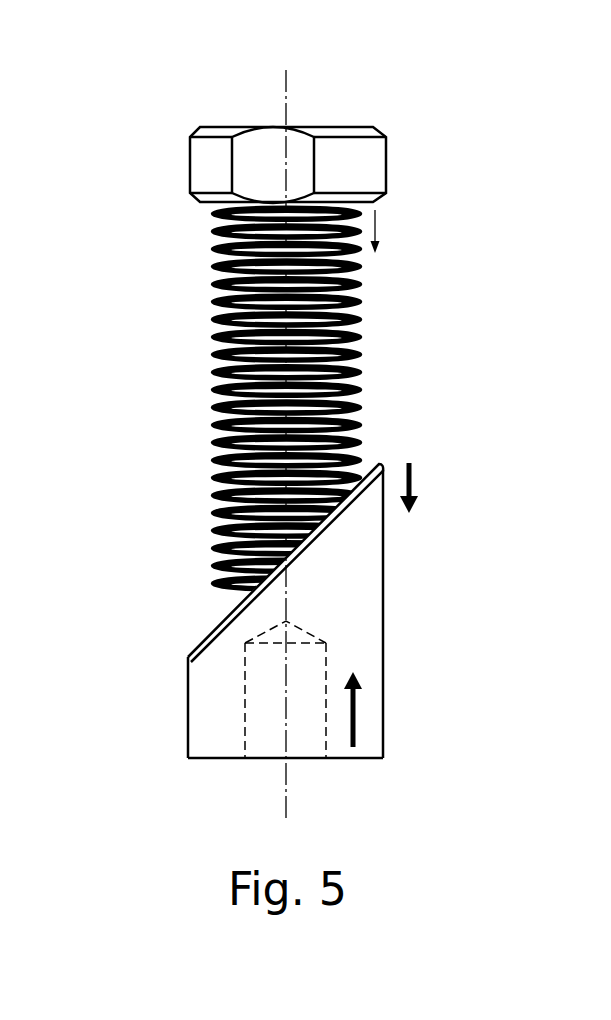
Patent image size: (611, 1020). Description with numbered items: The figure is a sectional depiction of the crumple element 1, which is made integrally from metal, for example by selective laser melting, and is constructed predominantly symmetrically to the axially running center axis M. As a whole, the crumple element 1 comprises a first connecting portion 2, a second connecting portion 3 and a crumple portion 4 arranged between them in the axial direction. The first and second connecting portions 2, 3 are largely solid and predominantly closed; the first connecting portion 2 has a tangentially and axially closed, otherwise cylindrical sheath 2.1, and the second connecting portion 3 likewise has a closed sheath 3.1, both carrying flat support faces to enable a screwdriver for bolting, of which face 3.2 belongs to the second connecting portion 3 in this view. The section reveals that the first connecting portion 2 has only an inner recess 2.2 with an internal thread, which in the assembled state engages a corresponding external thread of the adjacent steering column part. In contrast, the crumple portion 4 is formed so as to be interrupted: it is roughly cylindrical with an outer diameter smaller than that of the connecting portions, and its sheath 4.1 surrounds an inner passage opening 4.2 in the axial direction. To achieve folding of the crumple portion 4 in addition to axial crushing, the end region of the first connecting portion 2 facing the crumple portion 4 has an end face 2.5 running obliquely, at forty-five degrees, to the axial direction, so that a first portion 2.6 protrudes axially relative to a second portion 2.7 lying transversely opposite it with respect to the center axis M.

The crumple element 1 is at (372, 94).
The first connecting portion 2 is at (294, 602).
The sheath of the first connecting portion 2.1 is at (387, 693).
The inner recess 2.2 is at (298, 733).
The end face 2.5 is at (262, 556).
The first portion 2.6 is at (375, 456).
The second portion 2.7 is at (185, 637).
The second connecting portion 3 is at (225, 115).
The sheath of the second connecting portion 3.1 is at (172, 165).
The bearing surface of screw head 3.2 is at (272, 136).
The crumple portion 4 is at (274, 399).
The sheath of the crumple portion 4.1 is at (200, 357).
The inner passage opening 4.2 is at (286, 495).
The center axis M is at (284, 88).